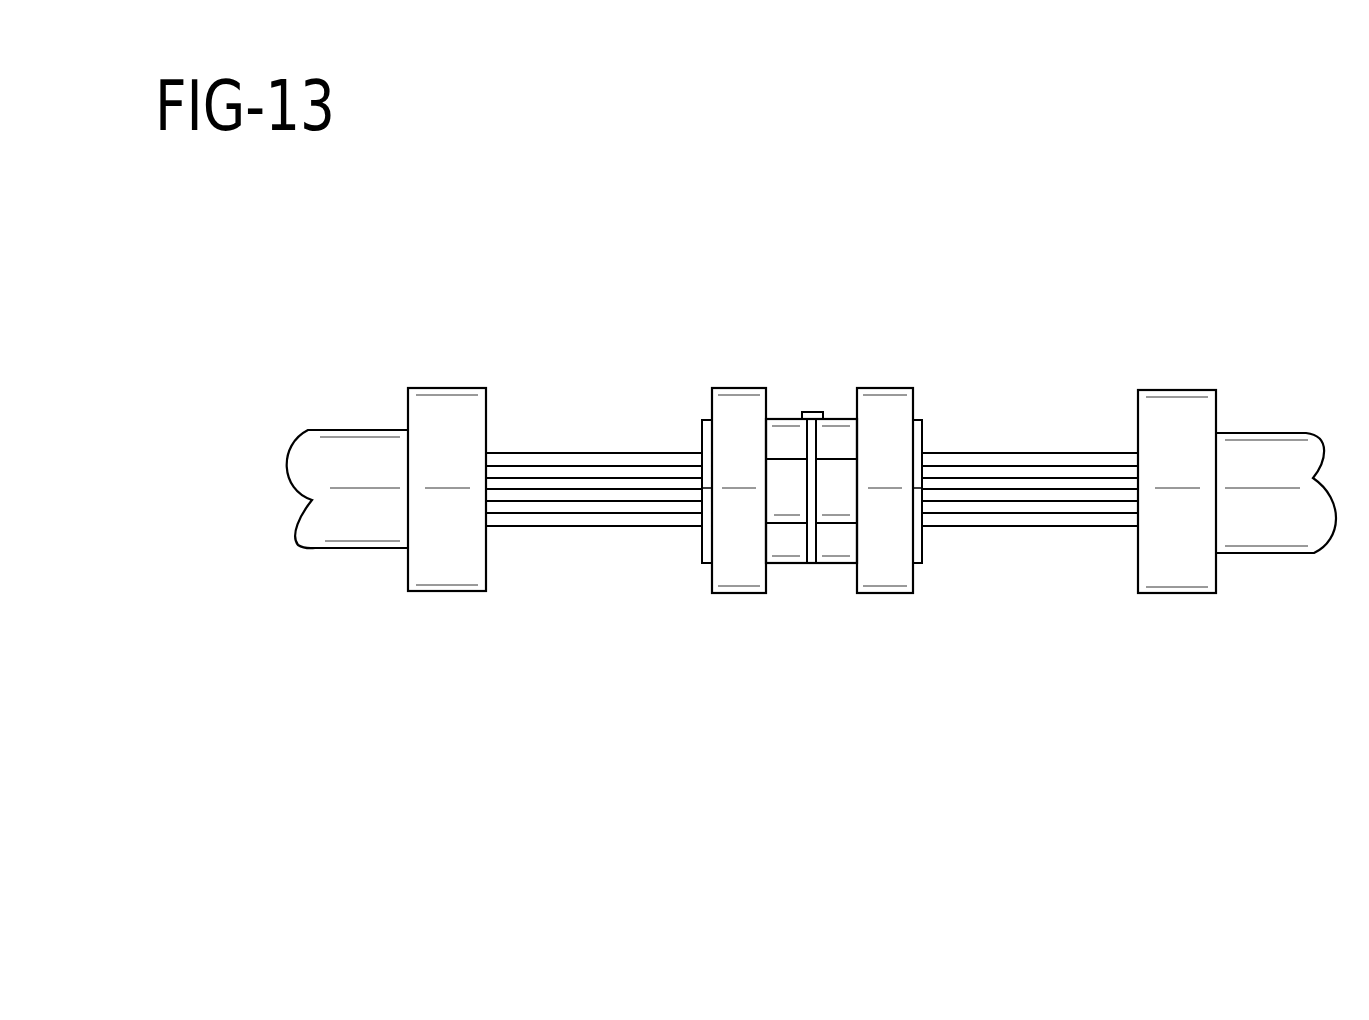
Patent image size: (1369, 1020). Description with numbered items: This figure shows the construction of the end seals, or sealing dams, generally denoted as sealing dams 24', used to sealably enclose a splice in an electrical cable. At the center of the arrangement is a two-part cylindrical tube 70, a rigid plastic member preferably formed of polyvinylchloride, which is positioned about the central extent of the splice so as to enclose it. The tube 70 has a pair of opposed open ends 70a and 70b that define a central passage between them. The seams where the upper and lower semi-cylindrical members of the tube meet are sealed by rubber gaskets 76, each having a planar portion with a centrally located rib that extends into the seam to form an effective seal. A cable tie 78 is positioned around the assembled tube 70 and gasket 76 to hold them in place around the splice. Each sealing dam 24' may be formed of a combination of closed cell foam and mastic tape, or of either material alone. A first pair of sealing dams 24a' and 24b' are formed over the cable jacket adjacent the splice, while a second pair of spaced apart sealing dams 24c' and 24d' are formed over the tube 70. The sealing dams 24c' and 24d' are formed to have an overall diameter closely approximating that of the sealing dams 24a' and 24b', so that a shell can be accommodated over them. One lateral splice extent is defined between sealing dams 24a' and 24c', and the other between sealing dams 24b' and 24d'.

The sealing dam 24' is at (811, 565).
The first sealing dam 24a' is at (454, 444).
The second sealing dam 24b' is at (1187, 447).
The third sealing dam 24c' is at (746, 446).
The fourth sealing dam 24d' is at (895, 446).
The two-part cylindrical tube 70 is at (790, 539).
The open end 70a is at (702, 447).
The open end 70b is at (923, 445).
The rubber gasket 76 is at (829, 497).
The cable tie 78 is at (813, 448).